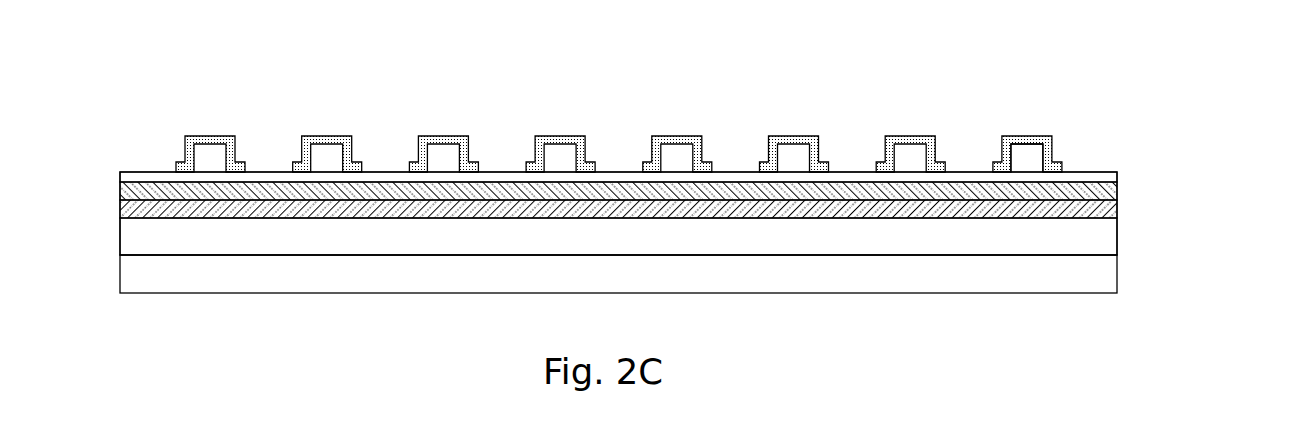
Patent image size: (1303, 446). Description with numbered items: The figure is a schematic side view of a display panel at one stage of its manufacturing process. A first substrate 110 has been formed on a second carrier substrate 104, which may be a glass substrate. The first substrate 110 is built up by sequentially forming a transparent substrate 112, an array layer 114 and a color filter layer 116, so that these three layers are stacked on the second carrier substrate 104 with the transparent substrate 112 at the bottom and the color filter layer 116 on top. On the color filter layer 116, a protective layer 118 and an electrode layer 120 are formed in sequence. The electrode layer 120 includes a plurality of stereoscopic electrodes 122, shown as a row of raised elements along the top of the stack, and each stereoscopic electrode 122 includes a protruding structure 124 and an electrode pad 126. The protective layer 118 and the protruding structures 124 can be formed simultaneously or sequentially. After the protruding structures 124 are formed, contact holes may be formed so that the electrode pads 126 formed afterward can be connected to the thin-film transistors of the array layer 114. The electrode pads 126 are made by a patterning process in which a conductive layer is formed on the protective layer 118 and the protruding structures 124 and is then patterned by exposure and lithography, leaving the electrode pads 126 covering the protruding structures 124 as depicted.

The second carrier substrate 104 is at (1092, 273).
The first substrate 110 is at (699, 192).
The transparent substrate 112 is at (1092, 234).
The array layer 114 is at (1095, 206).
The color filter layer 116 is at (1098, 190).
The protective layer 118 is at (667, 156).
The electrode layer 120 is at (695, 87).
The stereoscopic electrode 122 is at (1029, 87).
The protruding structure 124 is at (1011, 112).
The electrode pad 126 is at (1033, 140).